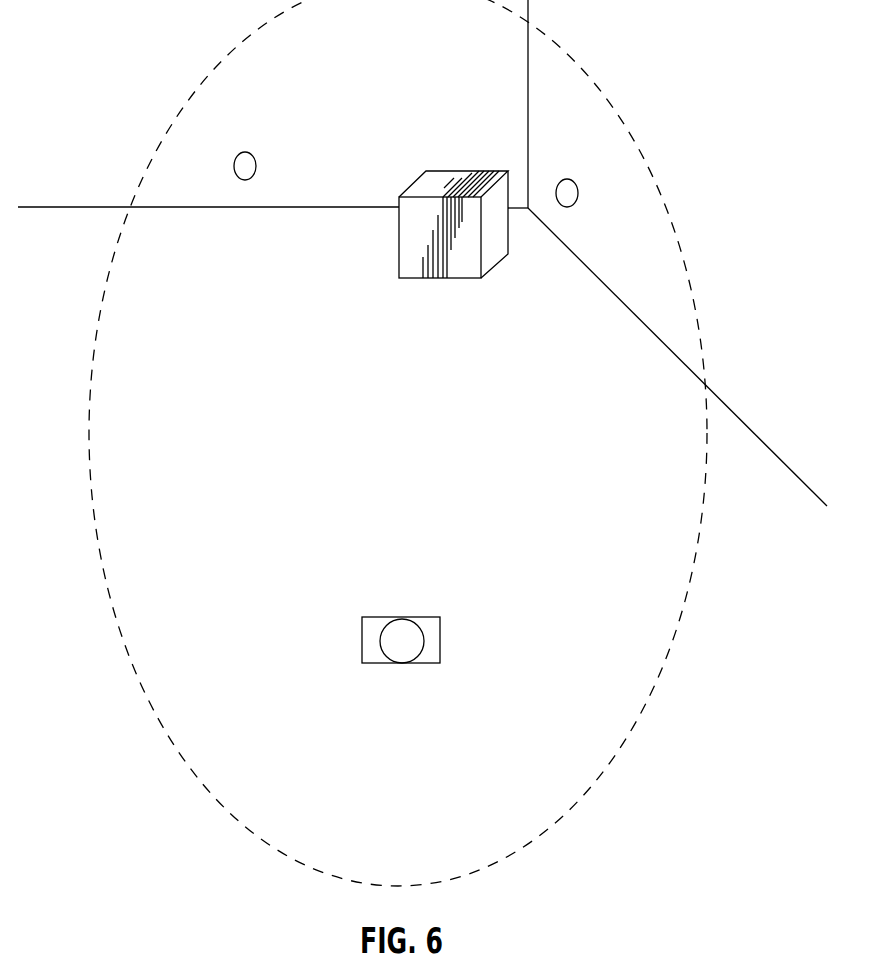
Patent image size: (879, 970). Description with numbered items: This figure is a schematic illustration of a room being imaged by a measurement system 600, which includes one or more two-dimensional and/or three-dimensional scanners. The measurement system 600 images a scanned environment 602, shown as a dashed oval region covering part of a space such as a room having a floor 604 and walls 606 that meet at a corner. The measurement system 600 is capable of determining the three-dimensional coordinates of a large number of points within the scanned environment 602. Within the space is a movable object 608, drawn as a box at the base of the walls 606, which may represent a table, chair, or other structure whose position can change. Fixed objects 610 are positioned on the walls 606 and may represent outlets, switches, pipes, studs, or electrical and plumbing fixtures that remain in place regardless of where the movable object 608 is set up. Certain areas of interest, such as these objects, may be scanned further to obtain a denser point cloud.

The measurement system 600 is at (362, 643).
The scanned environment 602 is at (202, 87).
The floor 604 is at (527, 369).
The walls 606 is at (438, 71).
The movable objects 608 is at (447, 192).
The fixed objects 610 is at (252, 155).